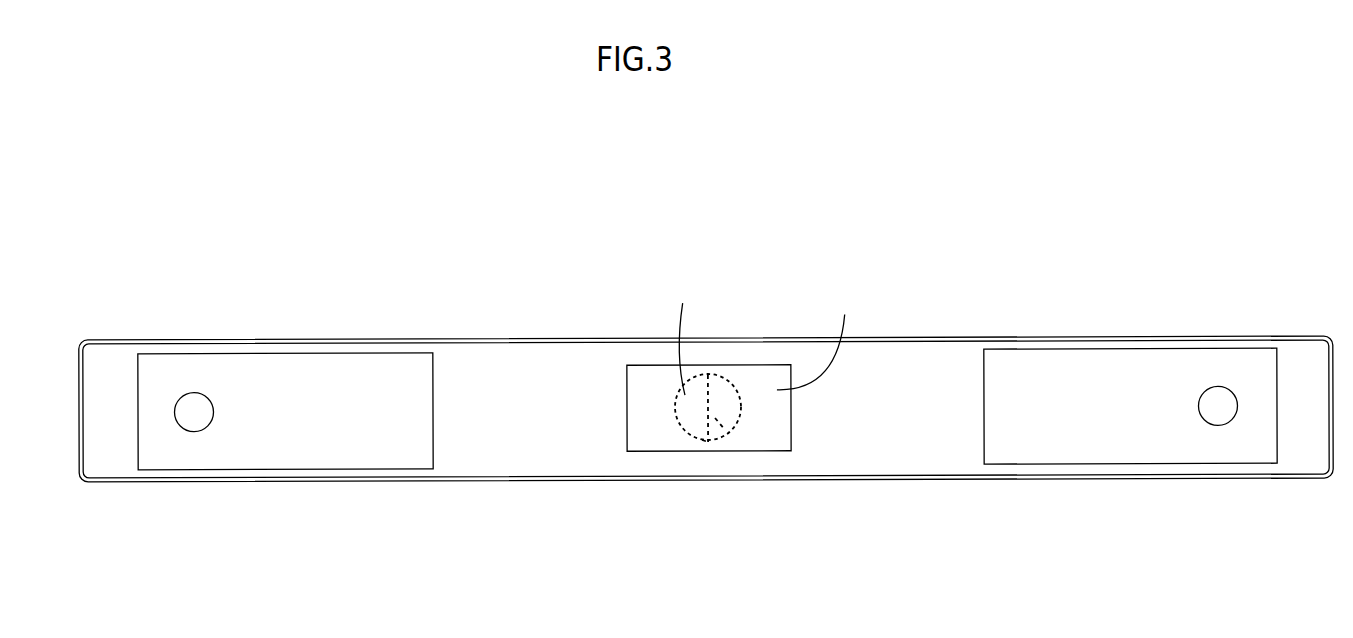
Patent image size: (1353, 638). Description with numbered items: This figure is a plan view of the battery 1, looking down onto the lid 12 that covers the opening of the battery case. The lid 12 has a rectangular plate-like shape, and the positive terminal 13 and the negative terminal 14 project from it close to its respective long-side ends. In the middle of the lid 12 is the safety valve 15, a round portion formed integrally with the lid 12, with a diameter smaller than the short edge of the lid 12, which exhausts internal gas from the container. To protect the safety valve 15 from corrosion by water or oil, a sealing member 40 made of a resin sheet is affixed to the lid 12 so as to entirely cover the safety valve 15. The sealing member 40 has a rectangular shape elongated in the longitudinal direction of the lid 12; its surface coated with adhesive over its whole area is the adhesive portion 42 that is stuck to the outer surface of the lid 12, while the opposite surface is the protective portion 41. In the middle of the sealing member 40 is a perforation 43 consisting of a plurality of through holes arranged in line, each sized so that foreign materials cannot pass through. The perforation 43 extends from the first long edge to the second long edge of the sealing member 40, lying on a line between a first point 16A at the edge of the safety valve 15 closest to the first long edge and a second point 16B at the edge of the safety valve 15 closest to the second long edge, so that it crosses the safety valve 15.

The battery 1 is at (720, 239).
The lid 12 is at (906, 366).
The positive terminal 13 is at (1218, 379).
The negative terminal 14 is at (192, 386).
The safety valve 15 is at (735, 392).
The first point 16A is at (710, 375).
The second point 16B is at (701, 442).
The sealing member 40 is at (635, 361).
The protective portion 41 is at (684, 333).
The adhesive portion 42 is at (816, 339).
The perforation 43 is at (715, 418).